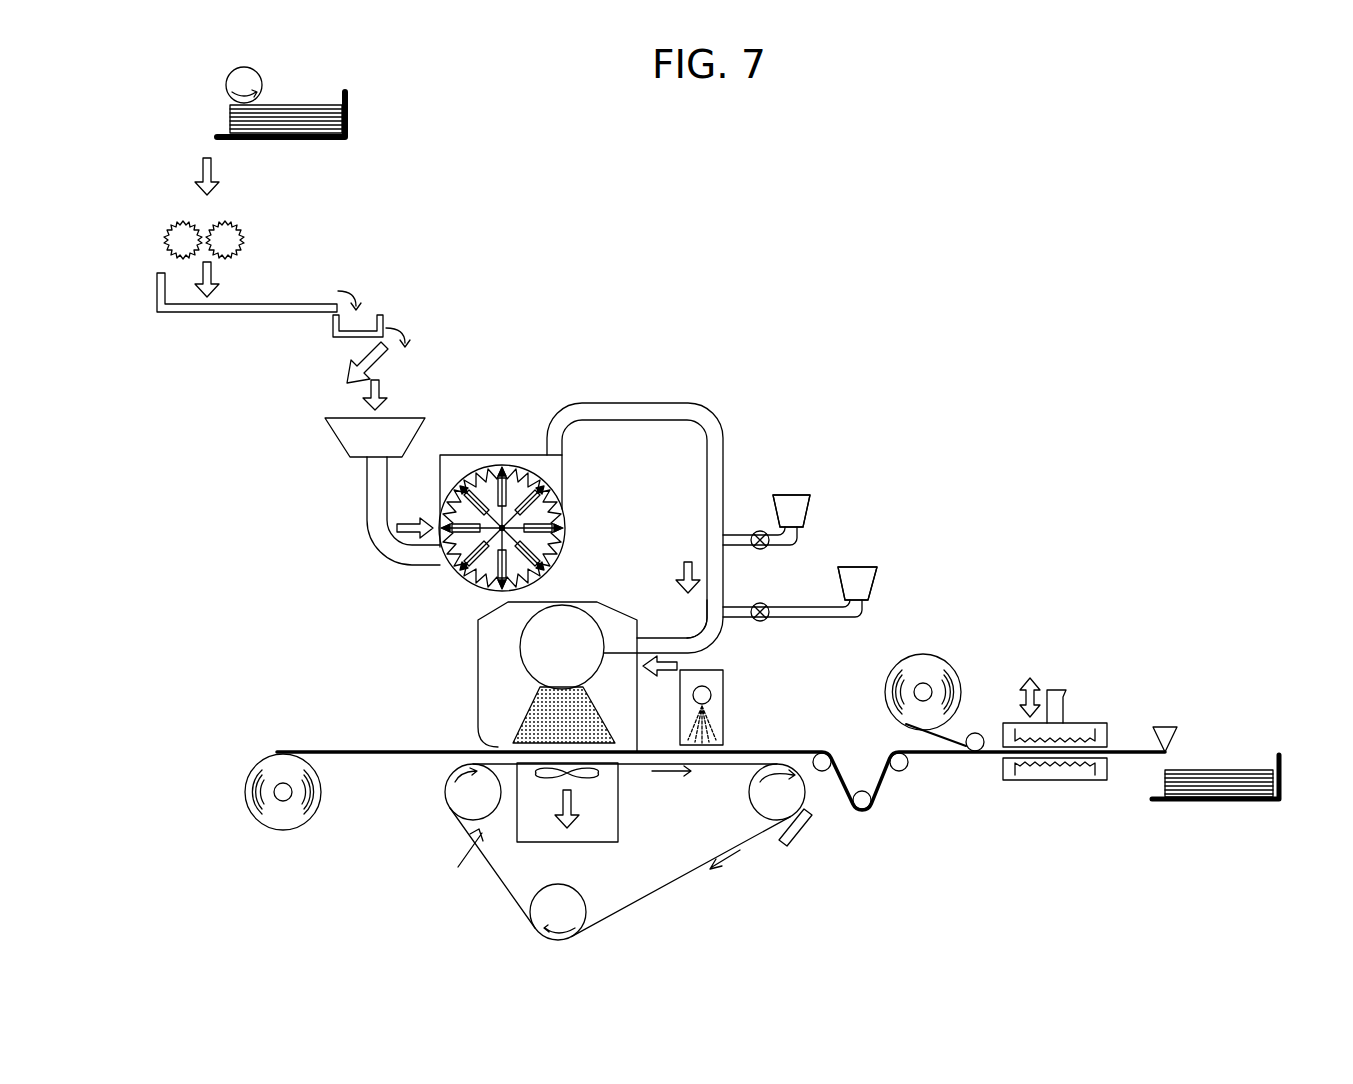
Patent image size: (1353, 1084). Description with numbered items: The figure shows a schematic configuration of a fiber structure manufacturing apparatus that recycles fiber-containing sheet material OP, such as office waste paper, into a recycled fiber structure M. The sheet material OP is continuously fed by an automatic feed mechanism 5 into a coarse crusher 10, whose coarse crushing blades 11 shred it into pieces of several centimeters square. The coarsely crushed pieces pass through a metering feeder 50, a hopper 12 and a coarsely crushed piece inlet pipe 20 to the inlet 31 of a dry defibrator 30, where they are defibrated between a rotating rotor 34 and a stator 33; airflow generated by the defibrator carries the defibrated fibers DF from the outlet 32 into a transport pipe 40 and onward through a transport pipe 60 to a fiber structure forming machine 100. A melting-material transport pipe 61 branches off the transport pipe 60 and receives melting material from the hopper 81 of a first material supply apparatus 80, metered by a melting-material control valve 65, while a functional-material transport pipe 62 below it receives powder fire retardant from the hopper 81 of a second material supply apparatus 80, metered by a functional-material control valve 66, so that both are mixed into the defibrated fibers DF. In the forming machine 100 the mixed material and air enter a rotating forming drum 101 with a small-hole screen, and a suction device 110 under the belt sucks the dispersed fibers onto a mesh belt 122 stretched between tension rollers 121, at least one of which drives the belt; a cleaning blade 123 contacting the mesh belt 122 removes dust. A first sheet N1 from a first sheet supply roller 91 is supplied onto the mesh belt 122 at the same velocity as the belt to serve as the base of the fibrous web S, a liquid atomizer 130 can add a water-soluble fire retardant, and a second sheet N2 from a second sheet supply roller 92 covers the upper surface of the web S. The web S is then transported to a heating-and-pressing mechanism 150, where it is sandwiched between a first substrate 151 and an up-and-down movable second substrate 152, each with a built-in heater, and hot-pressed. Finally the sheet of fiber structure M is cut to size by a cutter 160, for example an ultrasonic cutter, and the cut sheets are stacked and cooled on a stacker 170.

The automatic feed mechanism 5 is at (350, 112).
The coarse crusher 10 is at (160, 202).
The coarse crushing blades 11 is at (188, 231).
The hopper 12 is at (330, 444).
The coarsely crushed piece inlet pipe 20 is at (367, 505).
The dry defibrator 30 is at (477, 455).
The inlet 31 is at (447, 562).
The outlet 32 is at (562, 449).
The stator 33 is at (565, 515).
The rotor 34 is at (541, 544).
The transport pipe 40 is at (634, 403).
The metering feeder 50 is at (258, 313).
The transport pipe 60 is at (703, 629).
The melting-material transport pipe 61 is at (790, 540).
The functional-material transport pipe 62 is at (864, 613).
The melting-material control valve 65 is at (766, 550).
The functional-material control valve 66 is at (766, 622).
The material supply apparatus 80 is at (797, 494).
The hopper 81 is at (812, 501).
The first sheet supply roller 91 is at (287, 830).
The second sheet supply roller 92 is at (950, 665).
The fiber structure forming machine 100 is at (478, 640).
The forming drum 101 is at (527, 677).
The suction device 110 is at (620, 805).
The tension rollers 121 is at (492, 803).
The mesh belt 122 is at (688, 877).
The cleaning blade 123 is at (790, 851).
The liquid atomizer 130 is at (725, 680).
The heating-and-pressing mechanism 150 is at (1062, 666).
The first substrate 151 is at (1051, 782).
The second substrate 152 is at (1075, 722).
The cutter 160 is at (1165, 725).
The stacker 170 is at (1221, 806).
The sheet material OP is at (303, 104).
The defibrated fibers DF is at (687, 564).
The fibrous web S is at (749, 748).
The first sheet N1 is at (332, 752).
The second sheet N2 is at (978, 735).
The fiber structure M is at (1236, 768).